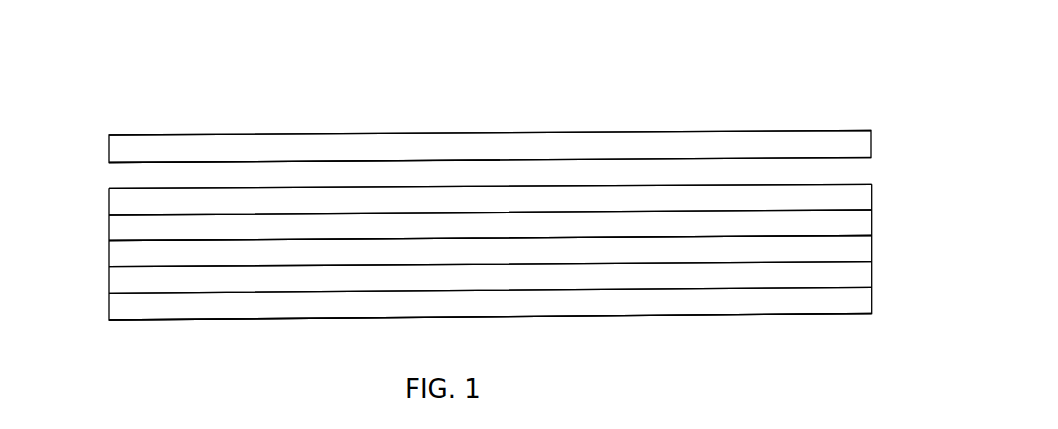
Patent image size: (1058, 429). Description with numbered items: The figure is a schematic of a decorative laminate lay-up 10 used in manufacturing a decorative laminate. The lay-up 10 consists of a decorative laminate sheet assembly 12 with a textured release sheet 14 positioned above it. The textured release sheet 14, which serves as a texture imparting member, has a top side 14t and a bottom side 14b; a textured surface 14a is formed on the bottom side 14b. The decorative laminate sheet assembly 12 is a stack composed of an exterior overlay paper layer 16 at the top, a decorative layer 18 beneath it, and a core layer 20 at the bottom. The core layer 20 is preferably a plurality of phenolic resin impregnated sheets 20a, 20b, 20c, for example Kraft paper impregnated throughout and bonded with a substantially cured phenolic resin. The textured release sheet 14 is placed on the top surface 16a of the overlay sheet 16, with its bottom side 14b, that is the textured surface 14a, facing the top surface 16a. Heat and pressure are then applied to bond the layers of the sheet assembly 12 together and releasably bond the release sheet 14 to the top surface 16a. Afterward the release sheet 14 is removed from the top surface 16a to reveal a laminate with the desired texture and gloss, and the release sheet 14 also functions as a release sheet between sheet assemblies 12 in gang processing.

The decorative laminate lay-up 10 is at (767, 78).
The decorative laminate sheet assembly 12 is at (287, 318).
The textured release sheet 14 is at (332, 134).
The top side 14t is at (218, 134).
The textured surface 14a is at (137, 162).
The bottom side 14b is at (172, 162).
The exterior overlay paper layer 16 is at (872, 197).
The top surface 16a is at (851, 182).
The decorative layer 18 is at (872, 220).
The core layer 20 is at (100, 243).
The phenolic resin impregnated sheet 20a is at (872, 248).
The phenolic resin impregnated sheet 20b is at (872, 273).
The phenolic resin impregnated sheet 20c is at (872, 302).